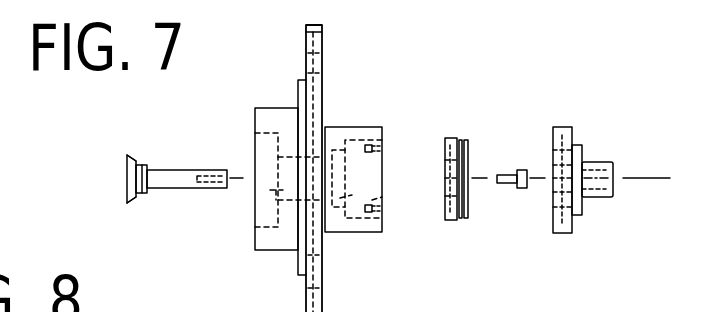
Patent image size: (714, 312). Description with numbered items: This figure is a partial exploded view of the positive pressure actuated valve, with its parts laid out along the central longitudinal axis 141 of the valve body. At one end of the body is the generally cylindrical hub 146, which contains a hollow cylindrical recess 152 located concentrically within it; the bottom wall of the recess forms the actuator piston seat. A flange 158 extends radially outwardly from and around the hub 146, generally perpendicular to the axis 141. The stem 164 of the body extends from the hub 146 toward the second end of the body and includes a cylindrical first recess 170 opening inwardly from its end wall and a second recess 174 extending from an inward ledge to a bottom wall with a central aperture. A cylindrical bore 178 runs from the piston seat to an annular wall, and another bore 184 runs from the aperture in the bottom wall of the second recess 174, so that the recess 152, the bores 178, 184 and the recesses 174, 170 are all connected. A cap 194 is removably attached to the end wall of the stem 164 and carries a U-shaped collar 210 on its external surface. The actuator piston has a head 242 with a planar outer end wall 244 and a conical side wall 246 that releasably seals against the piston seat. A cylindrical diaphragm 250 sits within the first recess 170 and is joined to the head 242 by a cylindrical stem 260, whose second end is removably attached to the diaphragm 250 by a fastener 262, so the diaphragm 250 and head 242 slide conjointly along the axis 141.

The central longitudinal axis 141 is at (650, 180).
The hub 146 is at (256, 108).
The recess 152 is at (270, 214).
The flange 158 is at (323, 68).
The stem 164 is at (383, 127).
The first recess 170 is at (375, 165).
The second recess 174 is at (382, 197).
The bore 178 is at (268, 188).
The bore 184 is at (330, 148).
The cap 194 is at (572, 128).
The collar 210 is at (600, 161).
The head 242 is at (133, 157).
The outer end wall 244 is at (127, 169).
The side wall 246 is at (130, 204).
The diaphragm 250 is at (448, 222).
The stem 260 is at (200, 169).
The fastener 262 is at (503, 188).